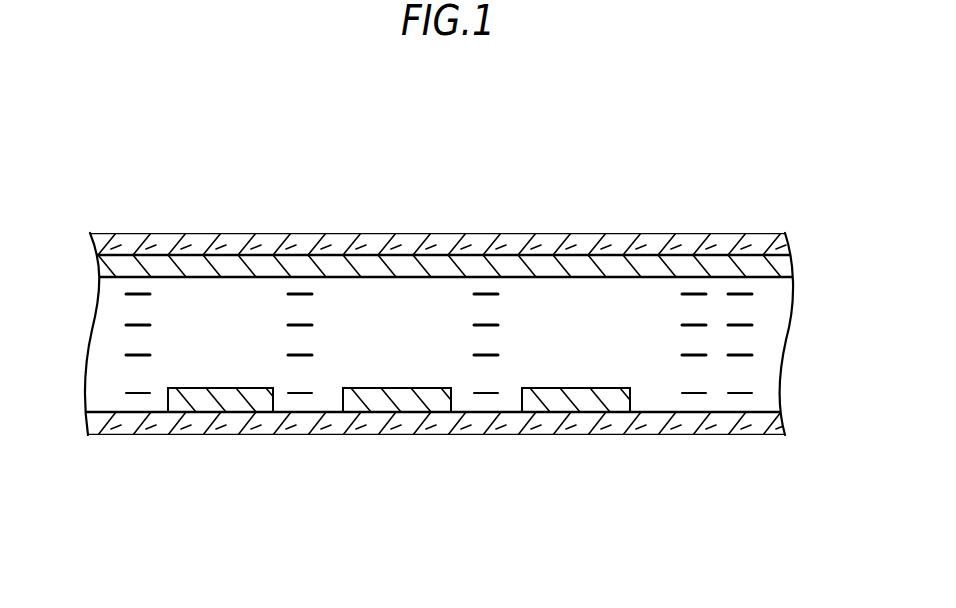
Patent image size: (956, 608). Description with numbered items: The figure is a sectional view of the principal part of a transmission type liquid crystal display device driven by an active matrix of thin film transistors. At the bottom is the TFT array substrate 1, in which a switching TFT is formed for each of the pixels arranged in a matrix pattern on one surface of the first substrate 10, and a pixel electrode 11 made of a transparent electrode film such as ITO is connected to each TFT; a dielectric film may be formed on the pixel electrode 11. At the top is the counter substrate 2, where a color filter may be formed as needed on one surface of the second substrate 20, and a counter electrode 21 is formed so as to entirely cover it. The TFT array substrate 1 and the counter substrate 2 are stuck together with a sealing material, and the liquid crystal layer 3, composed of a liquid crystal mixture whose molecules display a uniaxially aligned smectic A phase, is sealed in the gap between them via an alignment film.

The TFT array substrate 1 is at (450, 481).
The first substrate 10 is at (357, 413).
The pixel electrode 11 is at (427, 398).
The counter substrate 2 is at (450, 189).
The second substrate 20 is at (397, 247).
The counter electrode 21 is at (385, 153).
The liquid crystal layer 3 is at (585, 298).